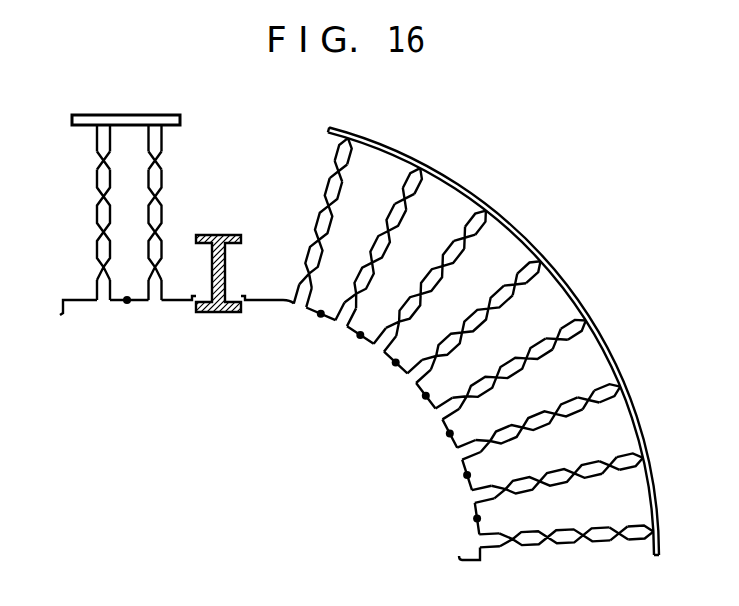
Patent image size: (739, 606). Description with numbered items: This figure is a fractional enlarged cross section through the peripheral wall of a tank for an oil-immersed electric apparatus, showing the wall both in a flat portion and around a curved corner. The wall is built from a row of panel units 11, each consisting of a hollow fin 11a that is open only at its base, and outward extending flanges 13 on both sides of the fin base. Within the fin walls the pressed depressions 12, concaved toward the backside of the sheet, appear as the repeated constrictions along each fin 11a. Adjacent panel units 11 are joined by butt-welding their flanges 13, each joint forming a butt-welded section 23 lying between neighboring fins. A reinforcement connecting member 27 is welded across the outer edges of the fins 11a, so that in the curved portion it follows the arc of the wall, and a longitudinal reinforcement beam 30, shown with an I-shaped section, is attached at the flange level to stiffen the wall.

The panel unit 11 is at (93, 207).
The hollow fin 11a is at (96, 137).
The depressions 12 is at (100, 158).
The flange 13 is at (112, 302).
The butt-welded section 23 is at (127, 304).
The reinforcement connecting member 27 is at (127, 113).
The longitudinal reinforcement beam 30 is at (225, 234).